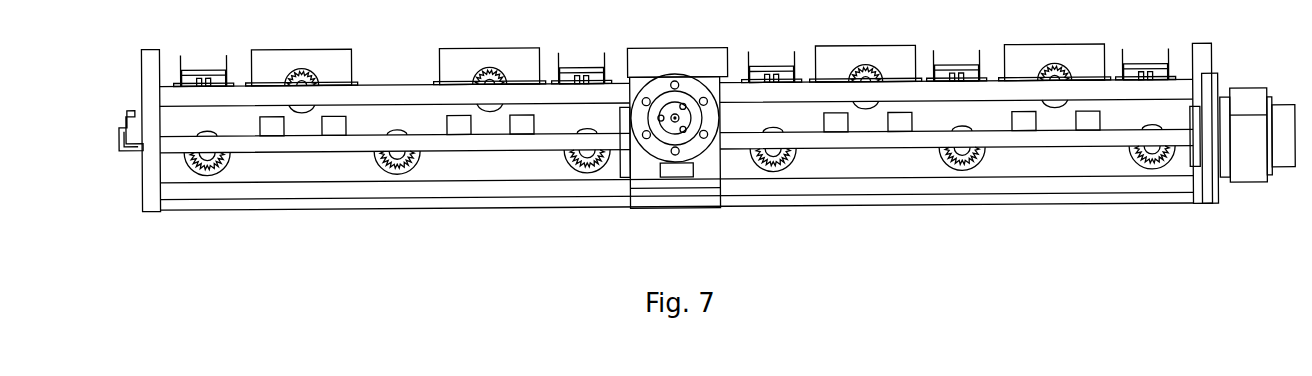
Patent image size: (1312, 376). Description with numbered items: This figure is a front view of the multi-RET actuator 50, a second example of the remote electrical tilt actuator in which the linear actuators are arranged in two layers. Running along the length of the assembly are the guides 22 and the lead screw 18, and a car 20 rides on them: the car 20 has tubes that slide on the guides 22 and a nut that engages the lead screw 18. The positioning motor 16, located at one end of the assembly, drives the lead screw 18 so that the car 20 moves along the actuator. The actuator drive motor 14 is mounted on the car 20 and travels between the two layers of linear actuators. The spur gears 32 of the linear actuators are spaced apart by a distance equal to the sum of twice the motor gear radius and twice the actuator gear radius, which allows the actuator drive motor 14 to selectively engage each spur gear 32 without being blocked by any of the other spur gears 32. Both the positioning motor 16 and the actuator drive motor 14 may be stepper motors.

The actuator drive motor 14 is at (692, 85).
The positioning motor 16 is at (1243, 177).
The lead screw 18 is at (340, 141).
The car 20 is at (708, 158).
The guides 22 is at (505, 189).
The spur gears 32 is at (493, 70).
The multi-RET actuator 50 is at (892, 250).